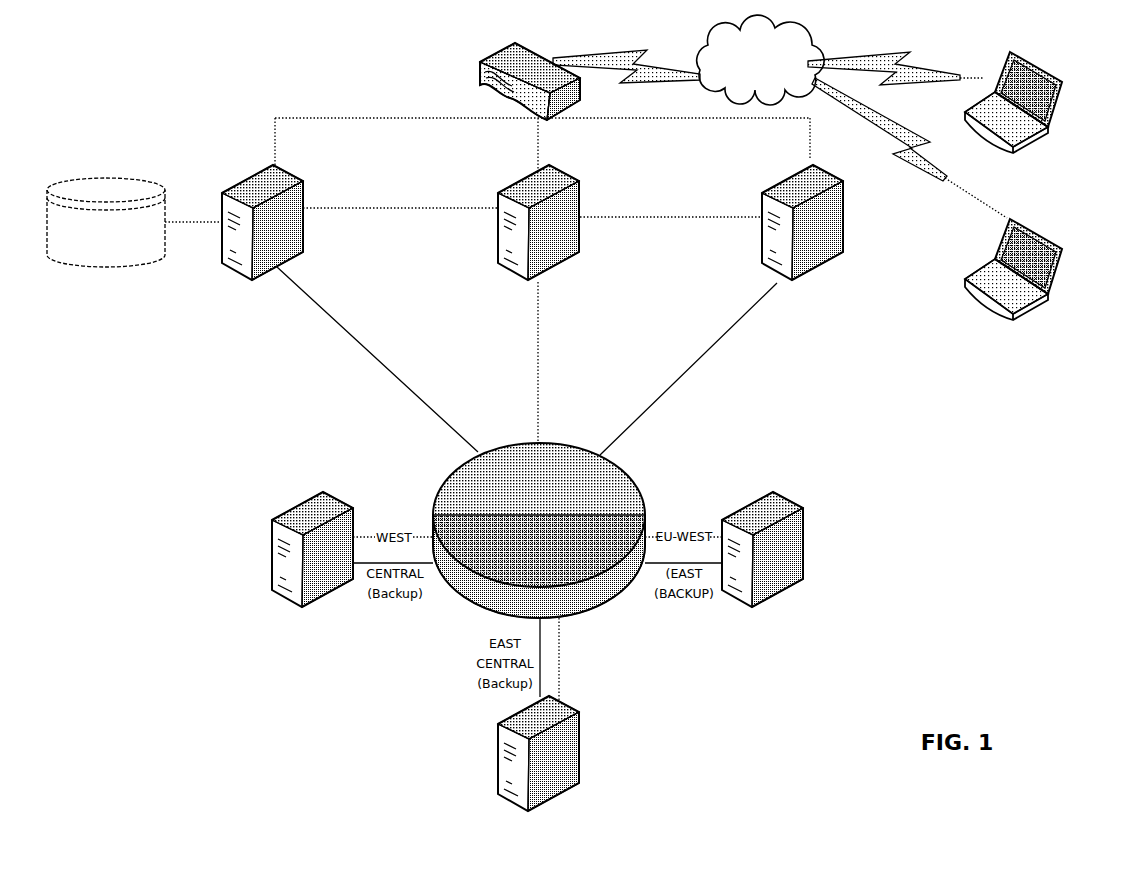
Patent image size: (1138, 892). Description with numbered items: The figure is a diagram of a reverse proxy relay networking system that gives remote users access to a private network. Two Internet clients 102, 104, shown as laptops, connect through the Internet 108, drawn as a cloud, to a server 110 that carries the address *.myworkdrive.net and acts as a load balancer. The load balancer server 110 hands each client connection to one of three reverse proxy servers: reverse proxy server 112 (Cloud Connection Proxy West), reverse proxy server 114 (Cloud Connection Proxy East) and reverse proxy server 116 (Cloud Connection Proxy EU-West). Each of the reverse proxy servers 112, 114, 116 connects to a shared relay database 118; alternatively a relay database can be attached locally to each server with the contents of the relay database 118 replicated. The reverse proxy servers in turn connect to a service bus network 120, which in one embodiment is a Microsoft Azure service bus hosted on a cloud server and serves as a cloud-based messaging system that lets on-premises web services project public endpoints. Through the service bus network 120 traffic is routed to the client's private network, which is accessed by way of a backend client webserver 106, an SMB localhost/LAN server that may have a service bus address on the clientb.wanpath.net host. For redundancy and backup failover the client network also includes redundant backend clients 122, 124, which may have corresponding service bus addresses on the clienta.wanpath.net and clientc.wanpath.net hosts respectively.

The Internet client 102 is at (1053, 125).
The Internet client 104 is at (1053, 292).
The backend client webserver 106 is at (580, 782).
The Internet 108 is at (803, 31).
The server 110 is at (537, 53).
The reverse proxy server 112 is at (297, 257).
The reverse proxy server 114 is at (545, 272).
The reverse proxy server 116 is at (787, 278).
The relay database 118 is at (92, 267).
The service bus network 120 is at (630, 470).
The backend client 122 is at (270, 522).
The backend client 124 is at (812, 542).